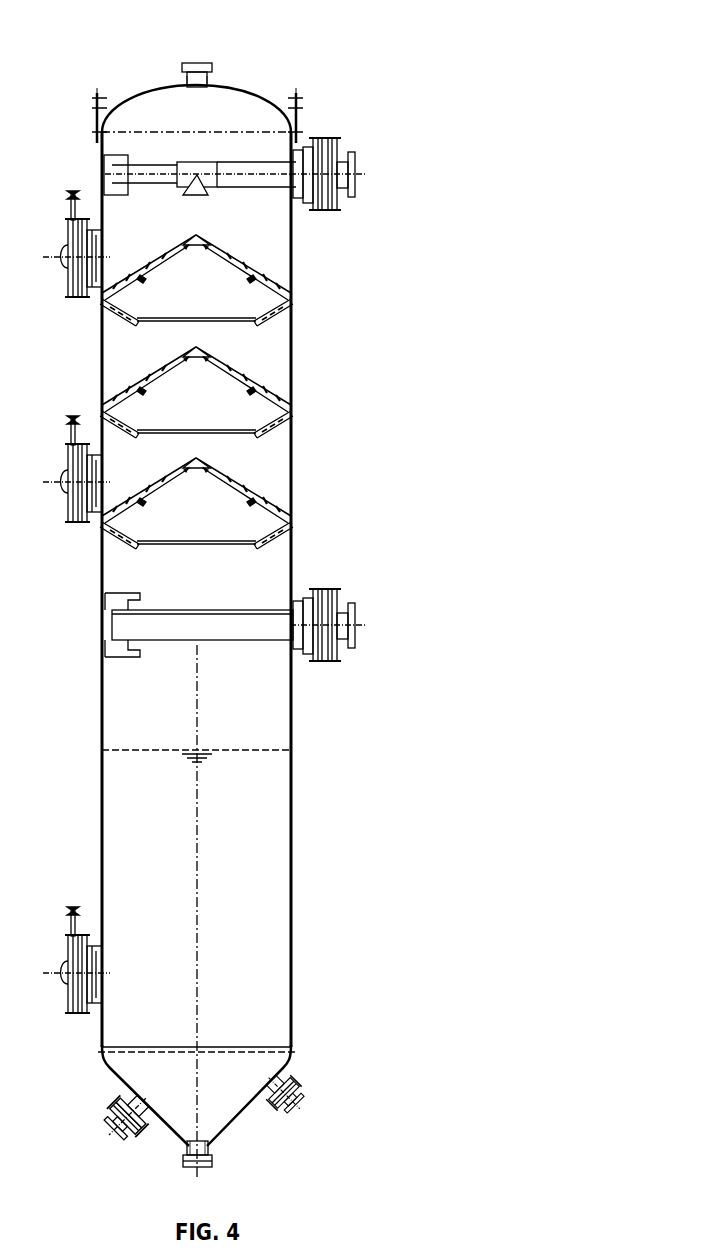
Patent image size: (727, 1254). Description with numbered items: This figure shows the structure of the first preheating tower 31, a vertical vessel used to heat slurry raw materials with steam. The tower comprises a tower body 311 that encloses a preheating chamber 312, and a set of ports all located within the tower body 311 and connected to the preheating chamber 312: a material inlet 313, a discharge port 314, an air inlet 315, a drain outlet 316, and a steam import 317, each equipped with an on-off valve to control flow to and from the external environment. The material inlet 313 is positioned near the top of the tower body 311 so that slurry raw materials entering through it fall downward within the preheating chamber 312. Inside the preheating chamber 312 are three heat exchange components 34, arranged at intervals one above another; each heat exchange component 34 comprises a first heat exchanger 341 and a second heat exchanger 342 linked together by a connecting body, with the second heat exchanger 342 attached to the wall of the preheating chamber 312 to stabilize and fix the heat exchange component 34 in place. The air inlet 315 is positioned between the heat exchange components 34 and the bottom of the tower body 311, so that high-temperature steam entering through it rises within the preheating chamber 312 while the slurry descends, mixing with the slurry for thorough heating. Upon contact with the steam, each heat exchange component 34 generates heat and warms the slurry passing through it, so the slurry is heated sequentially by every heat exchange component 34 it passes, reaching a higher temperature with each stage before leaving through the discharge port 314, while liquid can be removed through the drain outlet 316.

The first preheating tower 31 is at (124, 57).
The tower body 311 is at (293, 803).
The preheating chamber 312 is at (240, 720).
The material inlet 313 is at (337, 143).
The discharge port 314 is at (132, 1125).
The air inlet 315 is at (342, 603).
The drain outlet 316 is at (213, 1158).
The steam import 317 is at (198, 62).
The heat exchange component 34 is at (292, 296).
The first heat exchanger 341 is at (243, 263).
The second heat exchanger 342 is at (280, 318).